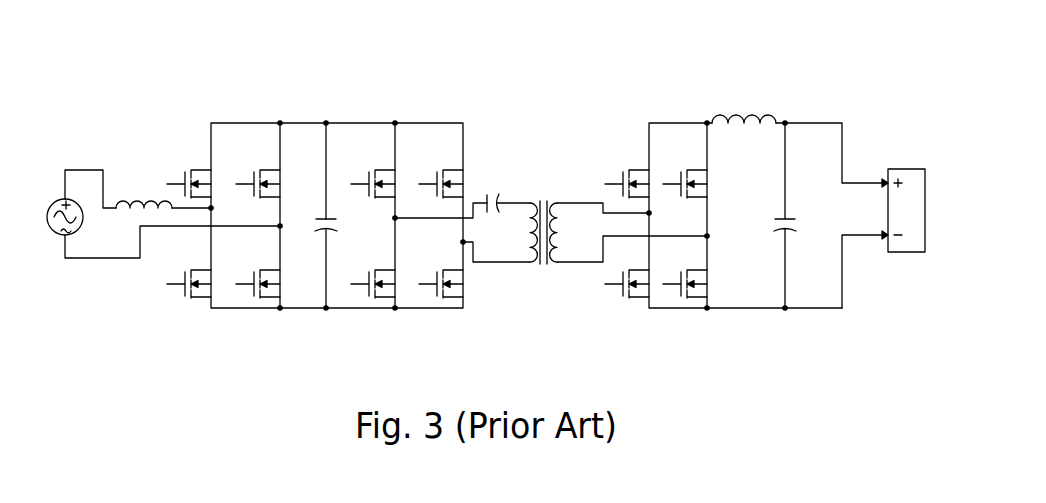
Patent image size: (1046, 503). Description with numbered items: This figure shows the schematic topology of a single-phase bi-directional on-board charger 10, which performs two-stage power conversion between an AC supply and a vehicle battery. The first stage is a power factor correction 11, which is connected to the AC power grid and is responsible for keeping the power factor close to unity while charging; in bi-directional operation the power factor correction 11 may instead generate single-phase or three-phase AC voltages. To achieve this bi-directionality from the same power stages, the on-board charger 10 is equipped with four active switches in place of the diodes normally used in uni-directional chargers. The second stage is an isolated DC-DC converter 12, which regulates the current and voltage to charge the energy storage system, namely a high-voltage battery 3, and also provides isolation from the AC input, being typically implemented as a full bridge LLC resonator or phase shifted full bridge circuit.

The bi-directional on-board charger 10 is at (165, 93).
The power factor correction 11 is at (328, 328).
The isolated DC-DC converter 12 is at (795, 328).
The high-voltage battery 3 is at (957, 328).